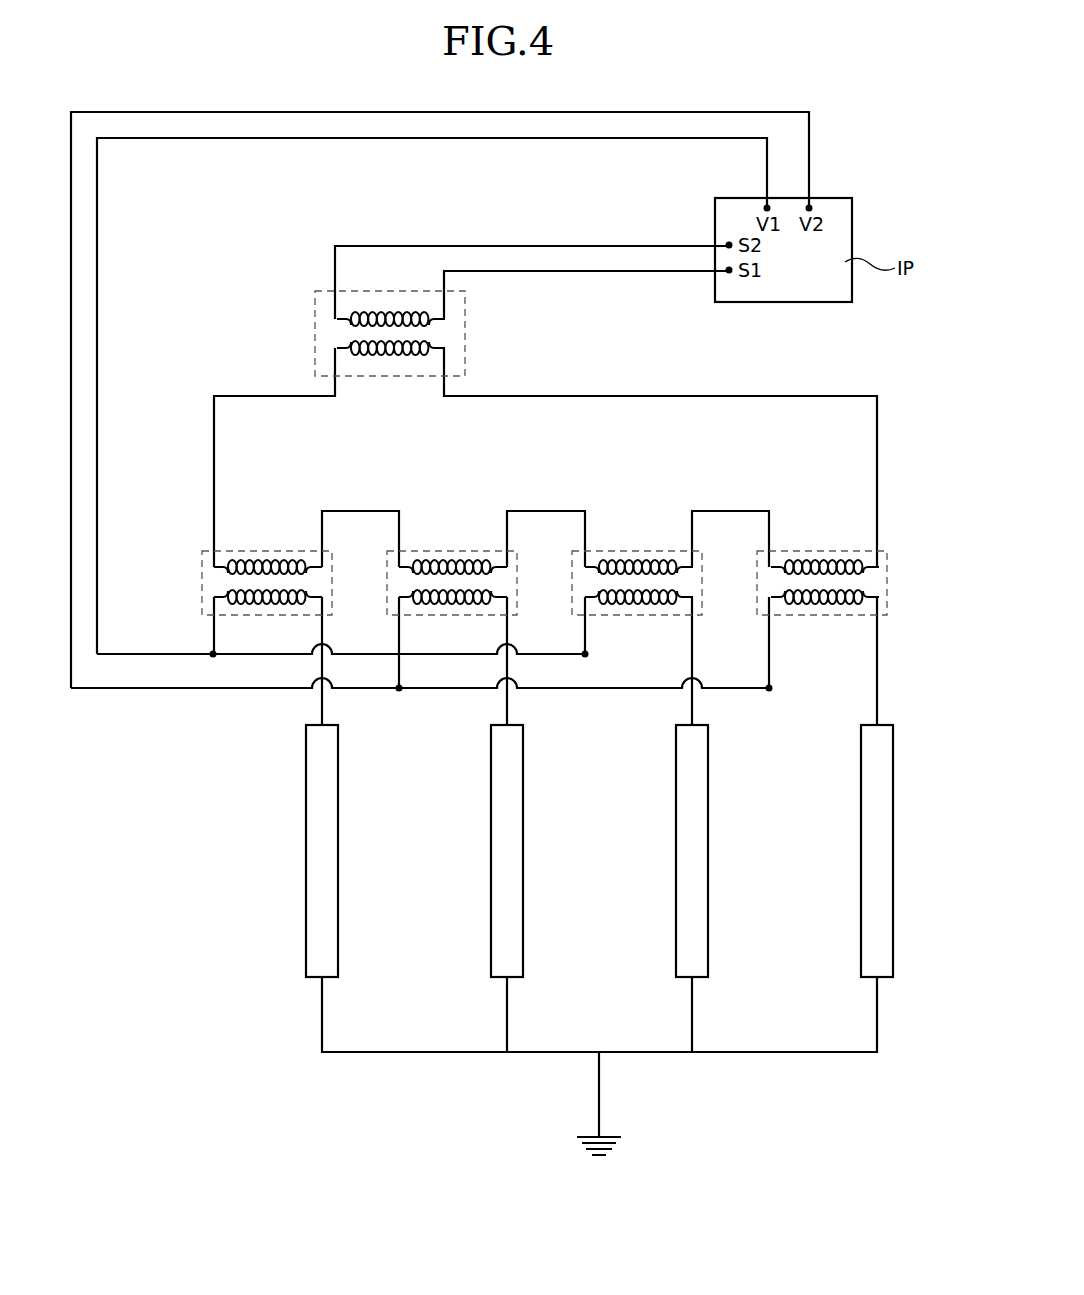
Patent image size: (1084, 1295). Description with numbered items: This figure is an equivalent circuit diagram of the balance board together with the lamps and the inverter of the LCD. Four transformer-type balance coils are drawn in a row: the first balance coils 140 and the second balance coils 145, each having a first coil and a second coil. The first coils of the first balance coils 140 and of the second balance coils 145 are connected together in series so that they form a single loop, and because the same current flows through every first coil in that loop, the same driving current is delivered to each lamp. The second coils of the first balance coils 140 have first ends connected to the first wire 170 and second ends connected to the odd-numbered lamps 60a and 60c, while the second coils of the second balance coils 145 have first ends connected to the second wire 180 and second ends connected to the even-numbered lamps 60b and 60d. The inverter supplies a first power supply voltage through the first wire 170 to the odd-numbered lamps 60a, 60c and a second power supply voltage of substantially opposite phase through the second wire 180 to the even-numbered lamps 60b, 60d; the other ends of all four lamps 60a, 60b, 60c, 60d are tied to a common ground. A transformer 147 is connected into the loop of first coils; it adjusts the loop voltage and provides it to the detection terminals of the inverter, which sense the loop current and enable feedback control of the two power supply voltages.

The first balance coil 140 is at (598, 551).
The second balance coil 145 is at (470, 617).
The transformer 147 is at (315, 324).
The first wire 170 is at (160, 654).
The second wire 180 is at (160, 690).
The odd-numbered lamp 60a is at (303, 903).
The even-numbered lamp 60b is at (488, 903).
The odd-numbered lamp 60c is at (673, 903).
The even-numbered lamp 60d is at (858, 903).